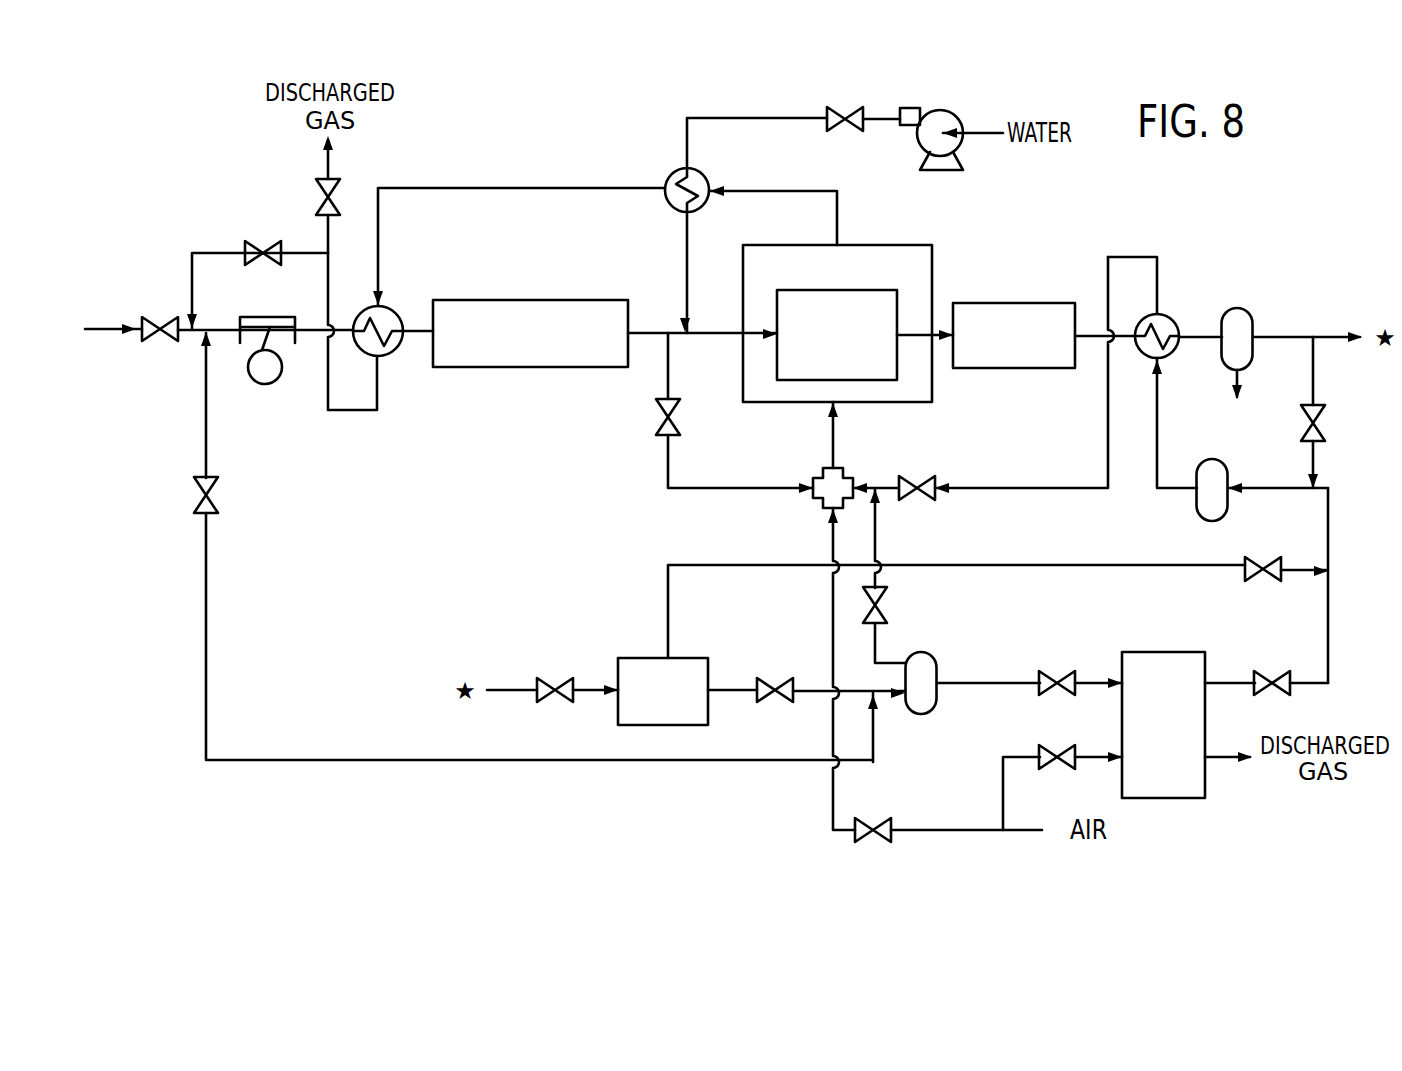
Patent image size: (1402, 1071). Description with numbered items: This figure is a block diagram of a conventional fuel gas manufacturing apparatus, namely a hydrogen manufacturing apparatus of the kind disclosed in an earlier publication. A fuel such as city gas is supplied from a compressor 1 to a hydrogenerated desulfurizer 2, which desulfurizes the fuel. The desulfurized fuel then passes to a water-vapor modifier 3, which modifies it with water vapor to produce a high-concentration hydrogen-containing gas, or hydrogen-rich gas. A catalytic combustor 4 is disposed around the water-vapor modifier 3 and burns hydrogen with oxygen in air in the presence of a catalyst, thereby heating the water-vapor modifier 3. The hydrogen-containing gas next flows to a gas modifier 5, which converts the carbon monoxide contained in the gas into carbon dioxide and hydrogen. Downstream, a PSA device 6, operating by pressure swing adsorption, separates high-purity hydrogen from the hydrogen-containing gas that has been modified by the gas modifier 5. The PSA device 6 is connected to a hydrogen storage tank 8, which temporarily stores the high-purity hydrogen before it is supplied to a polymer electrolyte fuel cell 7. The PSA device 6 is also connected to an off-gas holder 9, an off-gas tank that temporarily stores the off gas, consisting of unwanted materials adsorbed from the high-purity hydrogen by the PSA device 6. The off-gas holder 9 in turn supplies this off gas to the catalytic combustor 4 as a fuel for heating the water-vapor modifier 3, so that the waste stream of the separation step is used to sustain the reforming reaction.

The compressor 1 is at (266, 317).
The hydrogenerated desulfurizer 2 is at (620, 300).
The water-vapor modifier 3 is at (888, 290).
The catalytic combustor 4 is at (905, 244).
The gas modifier 5 is at (1069, 303).
The PSA device 6 is at (701, 658).
The polymer electrolyte fuel cell 7 is at (1198, 652).
The hydrogen storage tank 8 is at (921, 651).
The off-gas holder 9 is at (1213, 459).